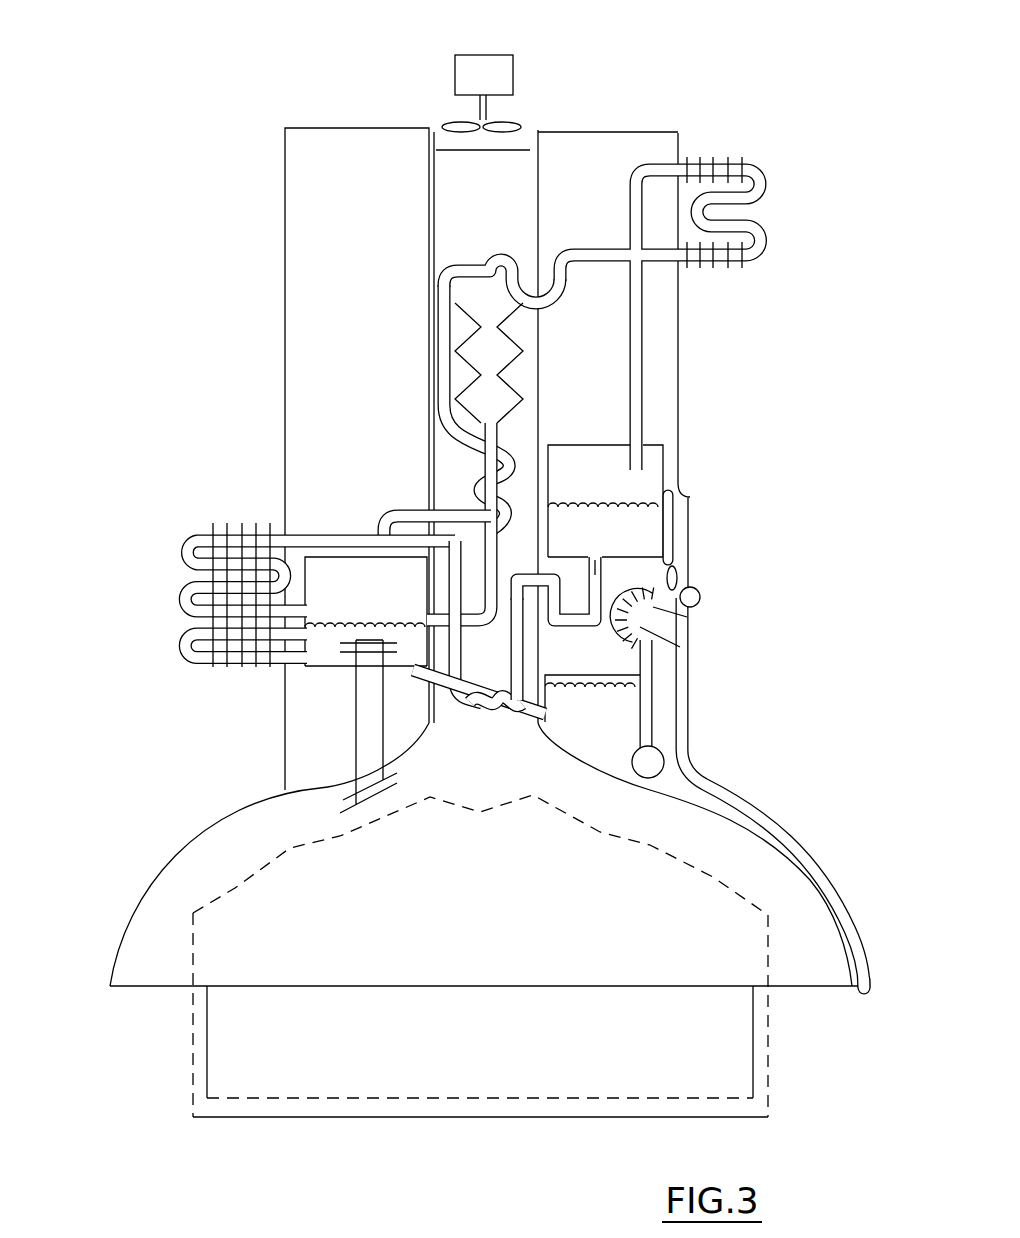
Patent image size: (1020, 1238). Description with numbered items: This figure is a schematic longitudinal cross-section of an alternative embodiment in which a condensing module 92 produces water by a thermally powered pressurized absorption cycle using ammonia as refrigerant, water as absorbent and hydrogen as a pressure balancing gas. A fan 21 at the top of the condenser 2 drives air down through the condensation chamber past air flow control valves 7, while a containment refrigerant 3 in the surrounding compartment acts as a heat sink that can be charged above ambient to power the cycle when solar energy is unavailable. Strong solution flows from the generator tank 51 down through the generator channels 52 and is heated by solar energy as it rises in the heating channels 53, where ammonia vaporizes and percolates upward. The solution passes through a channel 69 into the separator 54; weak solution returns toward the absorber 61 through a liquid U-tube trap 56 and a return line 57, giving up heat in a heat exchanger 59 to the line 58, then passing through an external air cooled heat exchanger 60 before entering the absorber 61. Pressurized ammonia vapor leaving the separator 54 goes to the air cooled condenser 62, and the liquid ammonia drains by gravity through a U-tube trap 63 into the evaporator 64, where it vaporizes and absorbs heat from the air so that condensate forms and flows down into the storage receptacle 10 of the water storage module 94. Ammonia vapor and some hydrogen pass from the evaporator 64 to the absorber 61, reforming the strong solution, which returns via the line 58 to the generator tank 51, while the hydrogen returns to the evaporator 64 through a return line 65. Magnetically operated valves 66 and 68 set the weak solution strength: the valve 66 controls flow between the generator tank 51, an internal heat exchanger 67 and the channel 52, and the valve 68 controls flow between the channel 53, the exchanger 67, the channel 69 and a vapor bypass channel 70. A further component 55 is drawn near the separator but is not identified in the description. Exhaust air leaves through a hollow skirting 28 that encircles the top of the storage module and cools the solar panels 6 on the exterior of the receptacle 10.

The condenser 2 is at (478, 206).
The refrigerant 3 is at (578, 418).
The solar panels 6 is at (223, 1035).
The air flow control valves 7 is at (443, 150).
The storage receptacle 10 is at (237, 893).
The fan 21 is at (486, 65).
The skirting 28 is at (132, 962).
The generator tank 51 is at (582, 732).
The generator channels 52 is at (803, 860).
The heating channels 53 is at (840, 900).
The separator 54 is at (614, 542).
The tank outlet tube 55 is at (598, 590).
The liquid U-tube trap 56 is at (551, 585).
The return line 57 is at (523, 652).
The line 58 is at (425, 674).
The heat exchanger 59 is at (285, 712).
The external air cooled heat exchanger 60 is at (180, 565).
The absorber 61 is at (347, 600).
The air cooled condenser 62 is at (765, 183).
The U-tube trap 63 is at (565, 285).
The evaporator 64 is at (510, 368).
The return line 65 is at (440, 371).
The valve 66 is at (665, 758).
The internal heat exchanger 67 is at (672, 634).
The valve 68 is at (698, 604).
The channel 69 is at (679, 560).
The vapor bypass channel 70 is at (680, 571).
The condensing module 92 is at (770, 451).
The water storage module 94 is at (780, 1057).